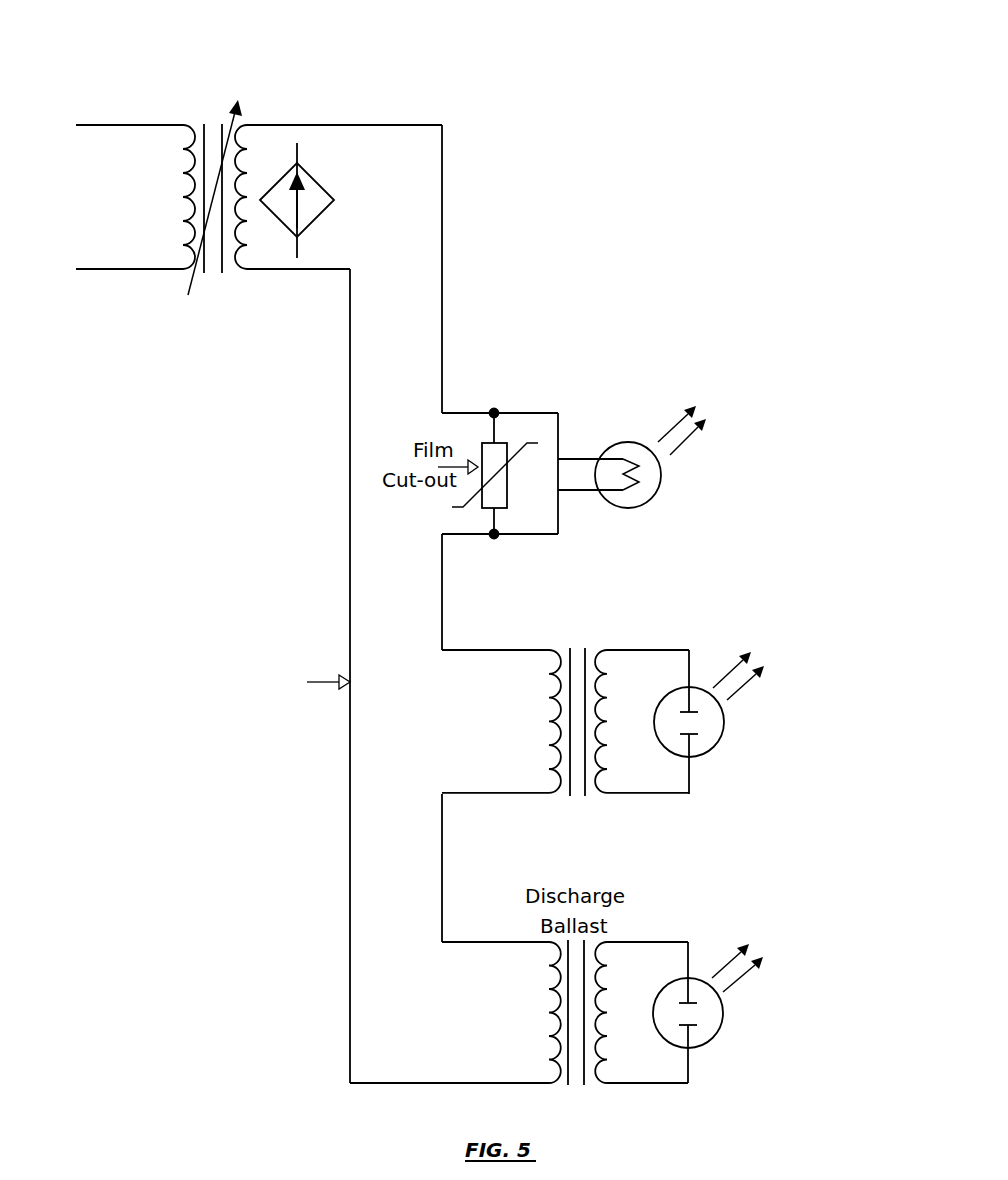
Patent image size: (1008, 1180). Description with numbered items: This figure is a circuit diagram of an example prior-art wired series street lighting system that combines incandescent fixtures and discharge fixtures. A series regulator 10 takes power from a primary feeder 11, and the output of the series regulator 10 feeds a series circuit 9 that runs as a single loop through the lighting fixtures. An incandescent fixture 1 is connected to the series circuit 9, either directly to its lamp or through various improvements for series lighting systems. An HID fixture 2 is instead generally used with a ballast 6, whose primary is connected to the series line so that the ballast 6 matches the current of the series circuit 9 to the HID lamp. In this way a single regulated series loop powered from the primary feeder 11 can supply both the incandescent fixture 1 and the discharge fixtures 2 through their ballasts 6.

The incandescent fixture 1 is at (628, 432).
The HID fixture 2 is at (721, 756).
The ballast 6 is at (535, 723).
The series circuit 9 is at (342, 737).
The series regulator 10 is at (214, 280).
The primary feeder 11 is at (90, 118).